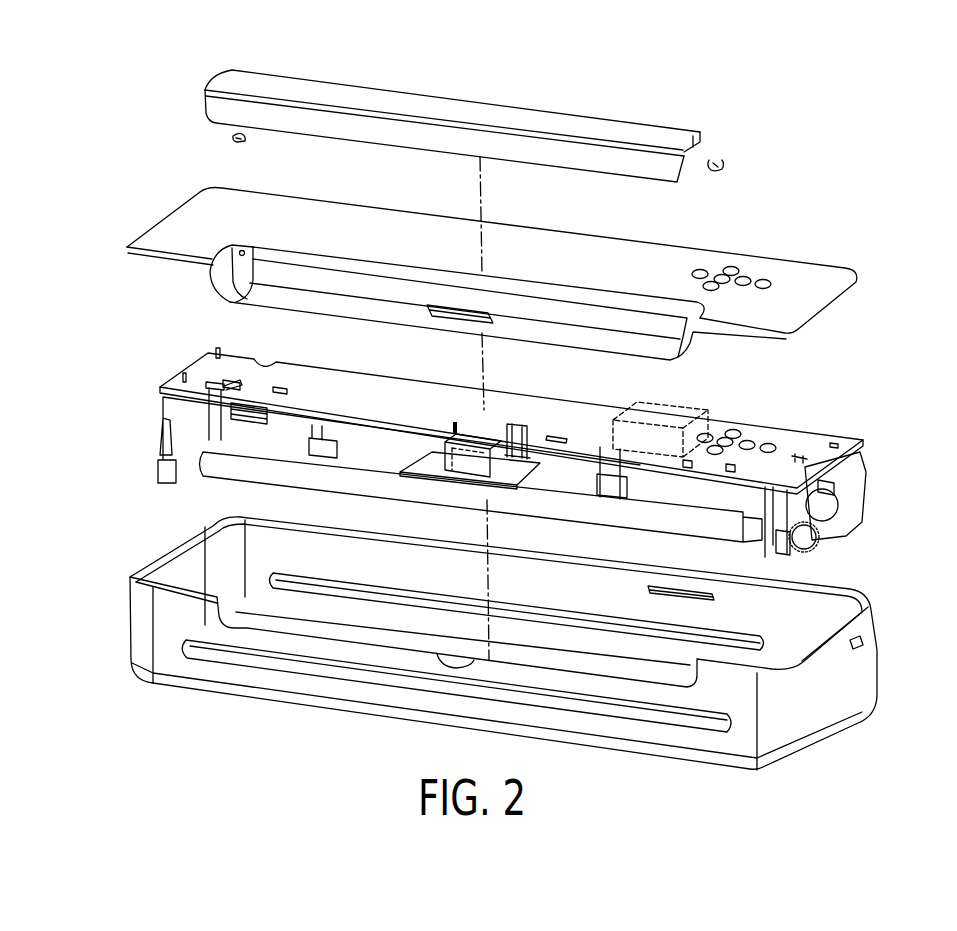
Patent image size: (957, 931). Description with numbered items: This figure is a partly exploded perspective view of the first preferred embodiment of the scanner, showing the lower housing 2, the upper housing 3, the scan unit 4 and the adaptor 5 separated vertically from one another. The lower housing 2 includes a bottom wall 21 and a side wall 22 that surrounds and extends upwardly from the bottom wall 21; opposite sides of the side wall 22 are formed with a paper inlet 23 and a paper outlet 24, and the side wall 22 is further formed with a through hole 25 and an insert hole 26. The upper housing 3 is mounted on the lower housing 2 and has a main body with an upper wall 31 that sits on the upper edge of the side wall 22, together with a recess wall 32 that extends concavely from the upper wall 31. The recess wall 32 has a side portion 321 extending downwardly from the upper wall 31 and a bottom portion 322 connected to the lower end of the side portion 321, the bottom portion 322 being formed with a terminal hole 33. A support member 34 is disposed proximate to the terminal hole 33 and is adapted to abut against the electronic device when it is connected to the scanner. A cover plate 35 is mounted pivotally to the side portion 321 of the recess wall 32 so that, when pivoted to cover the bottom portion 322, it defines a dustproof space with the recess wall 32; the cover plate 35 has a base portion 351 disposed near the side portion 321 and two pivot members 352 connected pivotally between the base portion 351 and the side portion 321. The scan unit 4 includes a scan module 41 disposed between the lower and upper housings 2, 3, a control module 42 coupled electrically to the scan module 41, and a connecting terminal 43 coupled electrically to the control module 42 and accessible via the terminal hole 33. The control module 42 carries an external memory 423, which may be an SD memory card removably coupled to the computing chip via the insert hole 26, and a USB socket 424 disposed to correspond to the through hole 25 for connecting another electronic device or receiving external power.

The lower housing 2 is at (893, 676).
The bottom wall 21 is at (585, 745).
The side wall 22 is at (830, 713).
The paper inlet 23 is at (260, 657).
The paper outlet 24 is at (545, 617).
The through hole 25 is at (860, 642).
The insert hole 26 is at (713, 590).
The upper housing 3 is at (893, 272).
The upper wall 31 is at (803, 277).
The recess wall 32 is at (223, 298).
The side portion 321 is at (220, 262).
The bottom portion 322 is at (353, 305).
The terminal hole 33 is at (497, 323).
The support member 34 is at (668, 173).
The cover plate 35 is at (615, 118).
The base portion 351 is at (690, 135).
The pivot members 352 is at (230, 138).
The scan unit 4 is at (885, 442).
The scan module 41 is at (673, 537).
The control module 42 is at (798, 433).
The external memory 423 is at (703, 415).
The USB socket 424 is at (853, 468).
The connecting terminal 43 is at (440, 478).
The adaptor 5 is at (454, 424).